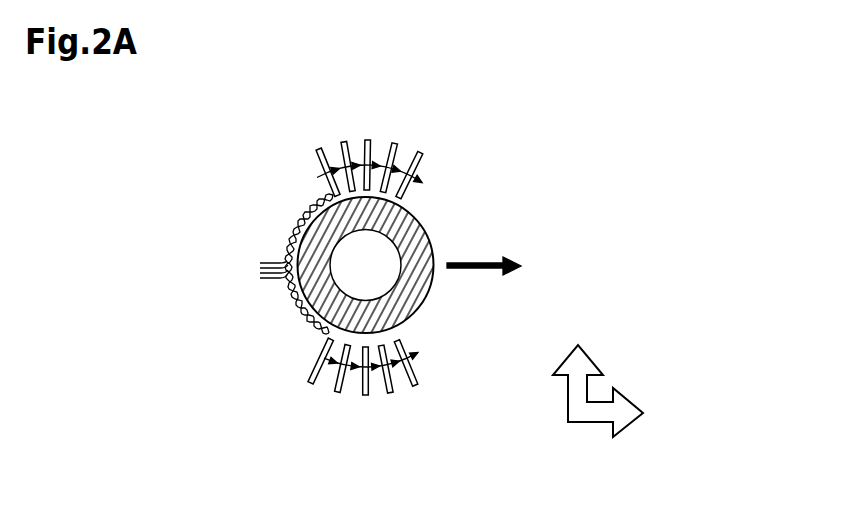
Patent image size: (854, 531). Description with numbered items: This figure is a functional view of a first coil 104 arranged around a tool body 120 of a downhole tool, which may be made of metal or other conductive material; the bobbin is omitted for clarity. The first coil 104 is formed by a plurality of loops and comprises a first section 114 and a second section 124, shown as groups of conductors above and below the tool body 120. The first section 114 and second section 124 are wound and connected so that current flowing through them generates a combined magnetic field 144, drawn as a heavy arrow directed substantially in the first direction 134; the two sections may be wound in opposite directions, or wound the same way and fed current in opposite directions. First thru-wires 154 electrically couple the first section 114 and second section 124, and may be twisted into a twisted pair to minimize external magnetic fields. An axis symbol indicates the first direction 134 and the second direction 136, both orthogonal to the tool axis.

The first coil 104 is at (414, 128).
The first section 114 is at (320, 178).
The second section 124 is at (313, 374).
The first thru-wires 154 is at (292, 233).
The combined magnetic field 144 is at (498, 261).
The tool body 120 is at (424, 297).
The second direction 136 is at (587, 392).
The first direction 134 is at (590, 417).